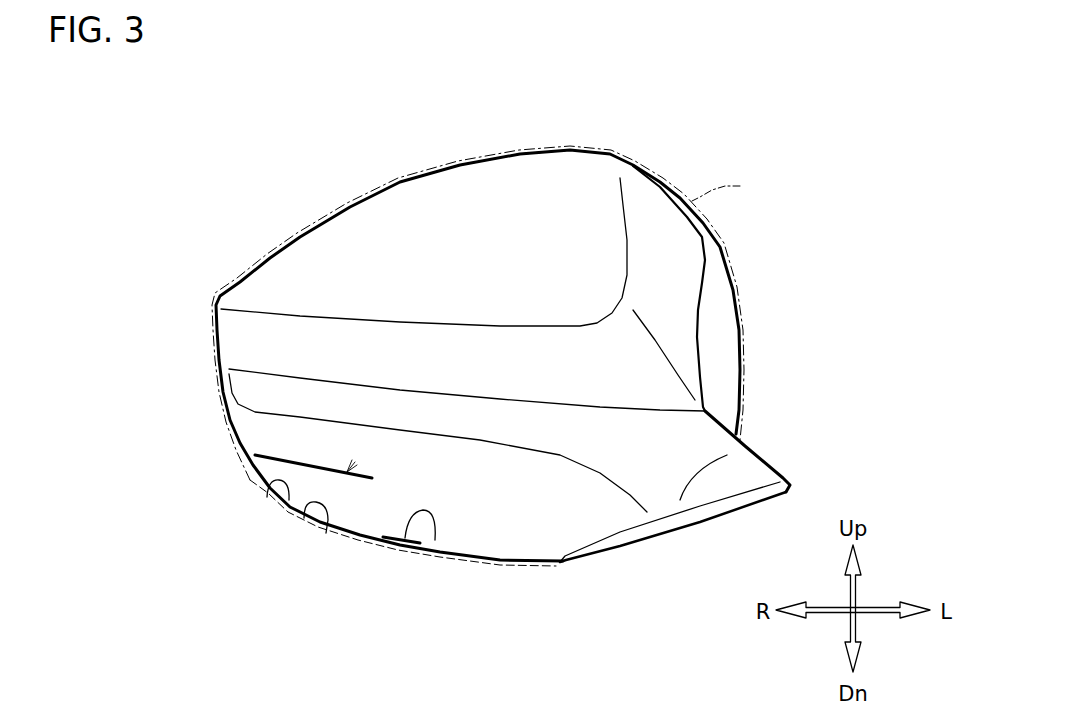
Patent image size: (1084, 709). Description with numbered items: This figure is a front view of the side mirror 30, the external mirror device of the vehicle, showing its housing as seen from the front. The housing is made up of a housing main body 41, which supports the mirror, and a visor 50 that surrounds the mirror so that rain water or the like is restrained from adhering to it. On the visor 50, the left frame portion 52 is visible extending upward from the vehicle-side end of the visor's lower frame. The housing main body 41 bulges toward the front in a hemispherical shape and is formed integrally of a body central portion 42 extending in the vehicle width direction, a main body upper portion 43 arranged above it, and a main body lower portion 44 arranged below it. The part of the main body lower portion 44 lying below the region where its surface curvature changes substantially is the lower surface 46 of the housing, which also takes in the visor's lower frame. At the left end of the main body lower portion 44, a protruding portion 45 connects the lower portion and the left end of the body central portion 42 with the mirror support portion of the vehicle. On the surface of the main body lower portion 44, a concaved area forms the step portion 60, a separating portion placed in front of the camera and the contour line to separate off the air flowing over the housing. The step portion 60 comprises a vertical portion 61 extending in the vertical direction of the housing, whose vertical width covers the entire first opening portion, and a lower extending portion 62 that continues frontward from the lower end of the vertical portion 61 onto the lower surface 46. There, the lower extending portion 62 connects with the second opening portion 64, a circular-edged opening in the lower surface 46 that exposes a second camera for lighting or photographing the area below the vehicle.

The side mirror 30 is at (479, 282).
The housing main body 41 is at (148, 183).
The body central portion 42 is at (430, 369).
The main body upper portion 43 is at (362, 216).
The main body lower portion 44 is at (401, 443).
The protruding portion 45 is at (729, 405).
The lower surface 46 is at (630, 559).
The visor 50 is at (537, 358).
The left frame portion 52 is at (725, 288).
The step portion 60 is at (347, 472).
The vertical portion 61 is at (284, 512).
The lower extending portion 62 is at (326, 533).
The second opening portion 64 is at (435, 540).